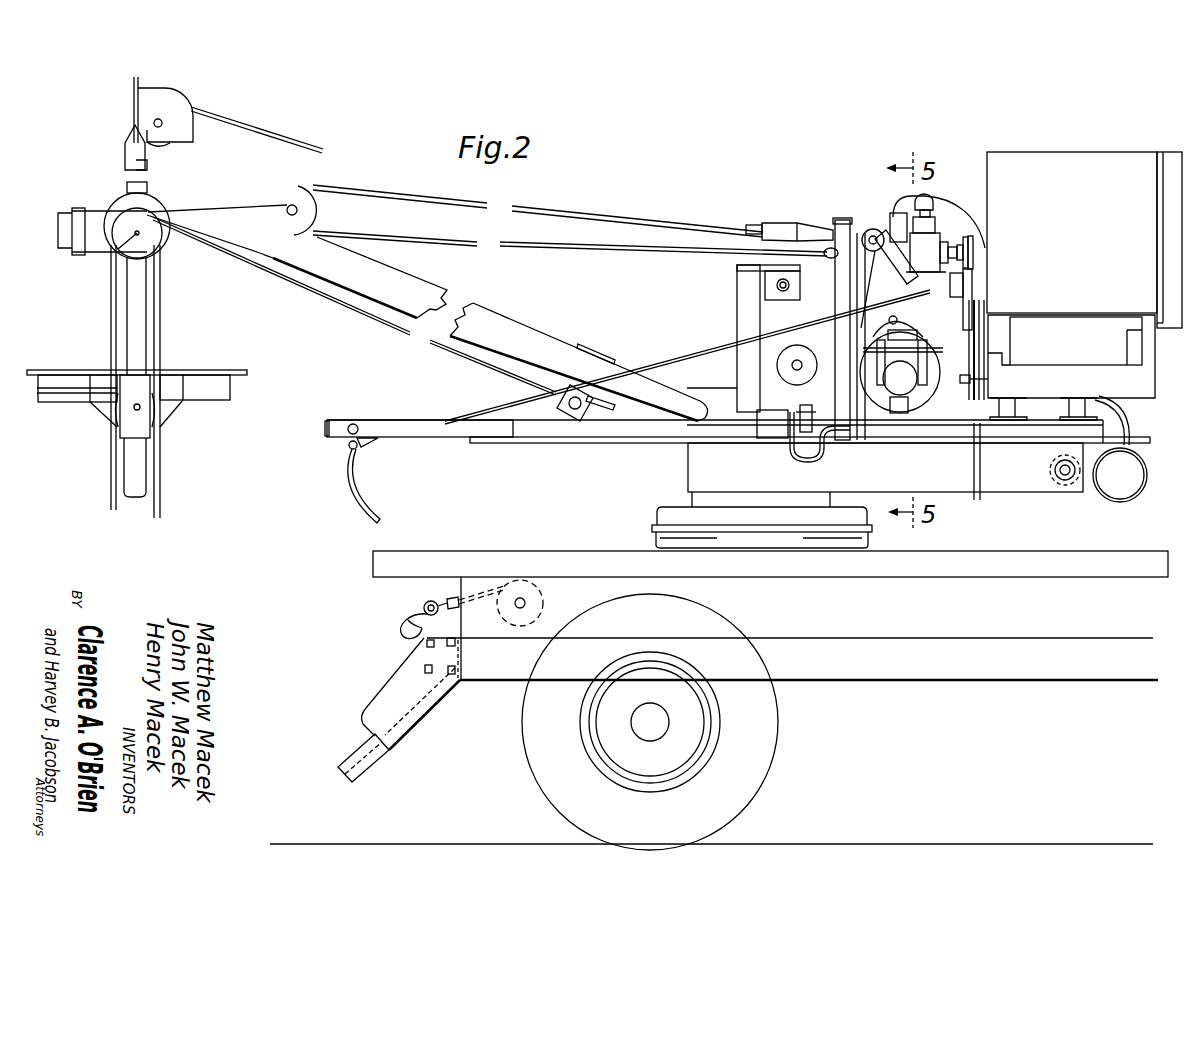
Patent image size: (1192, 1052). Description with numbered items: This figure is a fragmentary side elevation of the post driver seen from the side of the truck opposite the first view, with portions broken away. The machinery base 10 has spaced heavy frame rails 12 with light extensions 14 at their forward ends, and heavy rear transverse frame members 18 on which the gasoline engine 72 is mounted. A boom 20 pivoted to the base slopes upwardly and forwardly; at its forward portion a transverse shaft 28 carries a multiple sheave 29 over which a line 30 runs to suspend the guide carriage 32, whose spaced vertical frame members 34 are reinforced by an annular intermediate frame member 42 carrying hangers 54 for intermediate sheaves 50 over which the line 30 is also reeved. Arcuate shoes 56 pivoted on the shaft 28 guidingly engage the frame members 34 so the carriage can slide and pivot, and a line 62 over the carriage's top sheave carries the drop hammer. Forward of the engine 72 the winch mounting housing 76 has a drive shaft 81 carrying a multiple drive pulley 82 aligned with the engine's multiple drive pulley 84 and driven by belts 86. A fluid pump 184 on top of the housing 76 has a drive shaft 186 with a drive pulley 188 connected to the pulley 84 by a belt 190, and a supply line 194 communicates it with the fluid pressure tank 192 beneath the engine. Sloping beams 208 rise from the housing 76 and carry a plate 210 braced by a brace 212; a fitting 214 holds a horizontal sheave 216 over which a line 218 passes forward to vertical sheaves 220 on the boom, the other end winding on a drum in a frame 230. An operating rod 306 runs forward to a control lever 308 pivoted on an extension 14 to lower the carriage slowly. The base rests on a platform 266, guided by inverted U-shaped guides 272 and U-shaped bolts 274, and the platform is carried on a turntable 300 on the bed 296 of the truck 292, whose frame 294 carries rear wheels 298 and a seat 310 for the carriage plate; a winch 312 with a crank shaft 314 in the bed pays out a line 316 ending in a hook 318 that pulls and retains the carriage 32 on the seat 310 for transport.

The machinery base 10 is at (892, 324).
The frame rails 12 is at (572, 431).
The extensions 14 is at (443, 428).
The rear transverse frame members 18 is at (1066, 408).
The boom 20 is at (514, 317).
The transverse shaft 28 is at (110, 251).
The multiple sheave 29 is at (158, 253).
The line 30 is at (388, 325).
The guide carriage 32 is at (174, 478).
The vertical frame members 34 is at (146, 153).
The intermediate frame member 42 is at (217, 372).
The intermediate sheaves 50 is at (115, 412).
The hangers 54 is at (136, 428).
The shoes 56 is at (158, 206).
The line 62 is at (283, 137).
The gasoline engine 72 is at (1034, 158).
The mounting housing 76 is at (930, 403).
The drive shaft 81 is at (975, 379).
The multiple drive pulley 82 is at (994, 352).
The multiple drive pulley 84 is at (980, 310).
The drive belts 86 is at (984, 330).
The fluid pump 184 is at (928, 243).
The drive shaft 186 is at (975, 257).
The drive pulley 188 is at (981, 241).
The drive belt 190 is at (970, 285).
The fluid pressure tank 192 is at (1113, 483).
The supply line 194 is at (1122, 438).
The beams 208 is at (827, 327).
The plate 210 is at (878, 229).
The brace 212 is at (893, 270).
The fitting 214 is at (792, 226).
The sheave 216 is at (751, 226).
The line 218 is at (651, 220).
The vertical sheaves 220 is at (317, 212).
The frame 230 is at (748, 283).
The platform 266 is at (1008, 481).
The inverted U-shaped guide 272 is at (777, 428).
The U-shaped bolt 274 is at (972, 450).
The truck 292 is at (853, 685).
The frame 294 is at (967, 667).
The bed 296 is at (467, 557).
The rear wheels 298 is at (763, 766).
The turntable 300 is at (655, 518).
The operating rod 306 is at (668, 361).
The control lever 308 is at (368, 492).
The seat 310 is at (388, 753).
The winch 312 is at (553, 602).
The shaft 314 is at (522, 598).
The line 316 is at (457, 598).
The hook 318 is at (416, 612).